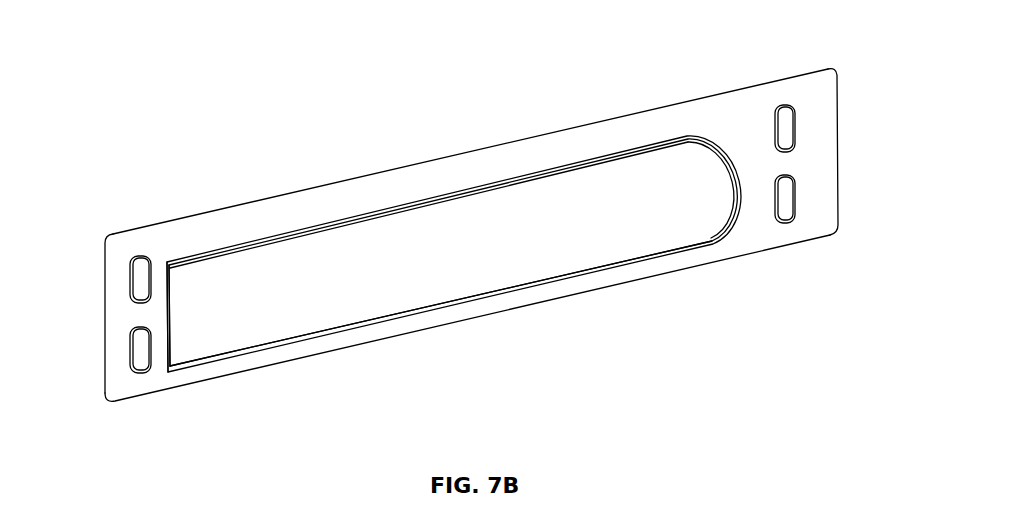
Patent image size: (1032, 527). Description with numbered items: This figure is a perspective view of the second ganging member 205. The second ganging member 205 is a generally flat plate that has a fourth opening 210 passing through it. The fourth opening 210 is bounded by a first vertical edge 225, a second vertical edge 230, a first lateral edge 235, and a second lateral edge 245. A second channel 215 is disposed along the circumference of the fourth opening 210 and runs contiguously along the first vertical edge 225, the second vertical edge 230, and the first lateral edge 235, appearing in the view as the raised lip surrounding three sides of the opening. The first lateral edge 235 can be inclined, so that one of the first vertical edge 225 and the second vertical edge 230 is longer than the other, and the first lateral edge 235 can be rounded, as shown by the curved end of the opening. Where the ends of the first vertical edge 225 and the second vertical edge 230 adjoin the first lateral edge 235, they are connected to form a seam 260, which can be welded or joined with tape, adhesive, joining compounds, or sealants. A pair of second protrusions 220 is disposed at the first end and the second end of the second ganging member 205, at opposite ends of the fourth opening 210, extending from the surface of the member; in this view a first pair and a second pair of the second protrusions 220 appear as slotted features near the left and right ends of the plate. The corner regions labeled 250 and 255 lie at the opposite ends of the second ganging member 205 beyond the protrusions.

The second ganging member 205 is at (772, 78).
The fourth opening 210 is at (350, 300).
The second channel 215 is at (416, 198).
The pair of second protrusions 220 is at (128, 345).
The first vertical edge 225 is at (577, 157).
The second vertical edge 230 is at (597, 273).
The first lateral edge 235 is at (725, 233).
The second lateral edge 245 is at (166, 268).
The right end of plate 250 is at (840, 80).
The left end of plate 255 is at (103, 383).
The seam 260 is at (703, 243).